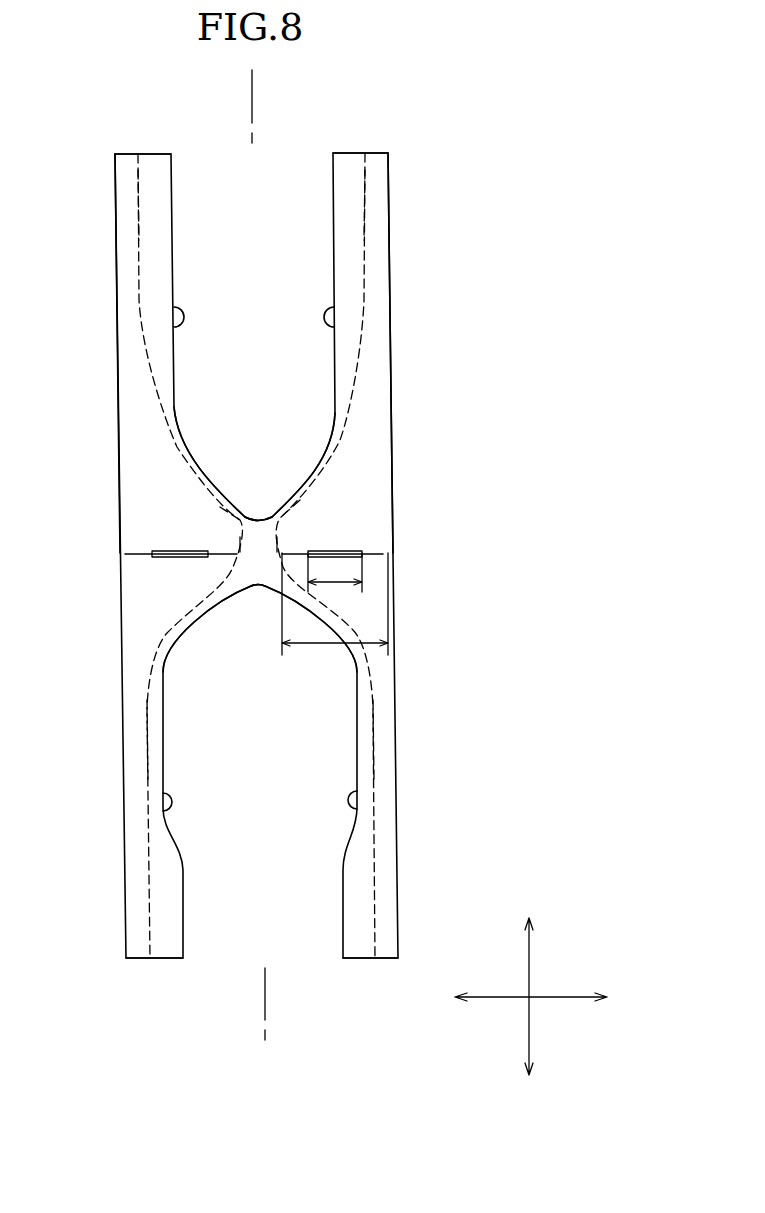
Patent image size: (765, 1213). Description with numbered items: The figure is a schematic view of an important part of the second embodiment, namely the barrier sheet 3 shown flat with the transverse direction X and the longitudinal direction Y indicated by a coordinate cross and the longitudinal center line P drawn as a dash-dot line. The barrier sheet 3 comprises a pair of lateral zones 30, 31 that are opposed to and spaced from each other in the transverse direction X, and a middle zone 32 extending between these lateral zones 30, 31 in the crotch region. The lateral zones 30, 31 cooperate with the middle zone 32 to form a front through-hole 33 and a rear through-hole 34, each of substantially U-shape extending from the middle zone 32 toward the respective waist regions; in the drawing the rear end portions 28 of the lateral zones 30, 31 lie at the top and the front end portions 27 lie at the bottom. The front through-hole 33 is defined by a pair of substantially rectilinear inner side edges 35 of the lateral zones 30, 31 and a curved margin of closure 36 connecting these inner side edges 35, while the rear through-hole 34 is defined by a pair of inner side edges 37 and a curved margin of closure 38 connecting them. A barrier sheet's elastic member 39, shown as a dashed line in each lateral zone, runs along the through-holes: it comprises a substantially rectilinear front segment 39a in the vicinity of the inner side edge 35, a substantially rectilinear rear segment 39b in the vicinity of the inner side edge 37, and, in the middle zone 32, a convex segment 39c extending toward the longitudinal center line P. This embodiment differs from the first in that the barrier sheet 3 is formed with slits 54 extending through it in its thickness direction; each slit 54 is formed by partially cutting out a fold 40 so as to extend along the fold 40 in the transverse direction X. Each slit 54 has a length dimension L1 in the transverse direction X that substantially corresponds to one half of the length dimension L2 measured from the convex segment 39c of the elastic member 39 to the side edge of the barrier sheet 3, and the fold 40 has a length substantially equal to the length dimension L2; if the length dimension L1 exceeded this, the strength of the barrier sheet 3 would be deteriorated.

The barrier sheet 3 is at (412, 138).
The lower end portions 27 is at (158, 960).
The upper end portions 28 is at (141, 152).
The lateral zone 30 is at (128, 461).
The lateral zone 31 is at (375, 466).
The middle zone 32 is at (258, 536).
The front through-hole 33 is at (239, 950).
The rear through-hole 34 is at (226, 158).
The inner side edges 35 is at (158, 800).
The curved margin of closure 36 is at (253, 590).
The inner side edges 37 is at (166, 308).
The curved margin of closure 38 is at (249, 517).
The barrier sheet's elastic member 39 is at (150, 362).
The front segment 39a is at (146, 738).
The rear segment 39b is at (138, 200).
The convex segment 39c is at (232, 522).
The fold 40 is at (137, 553).
The slit 54 is at (167, 557).
The length dimension L1 is at (340, 583).
The length dimension L2 is at (333, 648).
The longitudinal center line P is at (252, 90).
The transverse direction X is at (573, 995).
The longitudinal direction Y is at (529, 950).